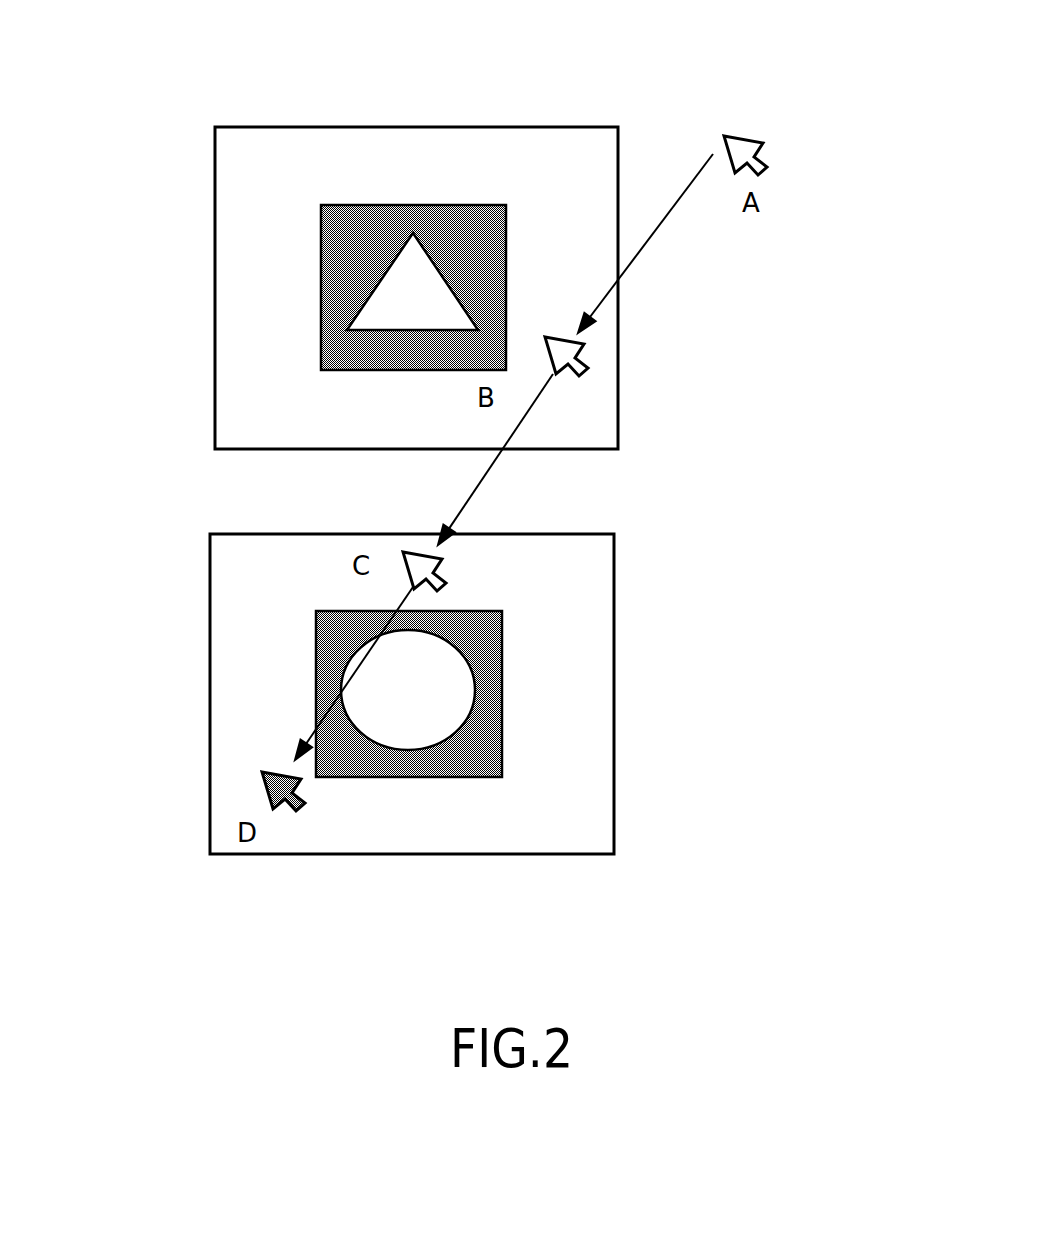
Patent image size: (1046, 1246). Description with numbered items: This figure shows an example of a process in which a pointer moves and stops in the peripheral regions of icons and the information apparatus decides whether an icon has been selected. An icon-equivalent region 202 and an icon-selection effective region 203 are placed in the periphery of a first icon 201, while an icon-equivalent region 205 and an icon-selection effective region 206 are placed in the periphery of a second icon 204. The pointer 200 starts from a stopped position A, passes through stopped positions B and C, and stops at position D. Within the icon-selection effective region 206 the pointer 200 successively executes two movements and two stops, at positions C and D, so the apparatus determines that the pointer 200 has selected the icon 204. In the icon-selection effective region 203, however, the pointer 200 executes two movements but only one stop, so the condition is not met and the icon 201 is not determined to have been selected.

The pointer 200 is at (758, 128).
The icon 201 is at (360, 310).
The icon-equivalent region 202 is at (337, 370).
The icon-selection effective region 203 is at (215, 160).
The icon 204 is at (470, 663).
The icon-equivalent region 205 is at (502, 750).
The icon-selection effective region 206 is at (615, 820).